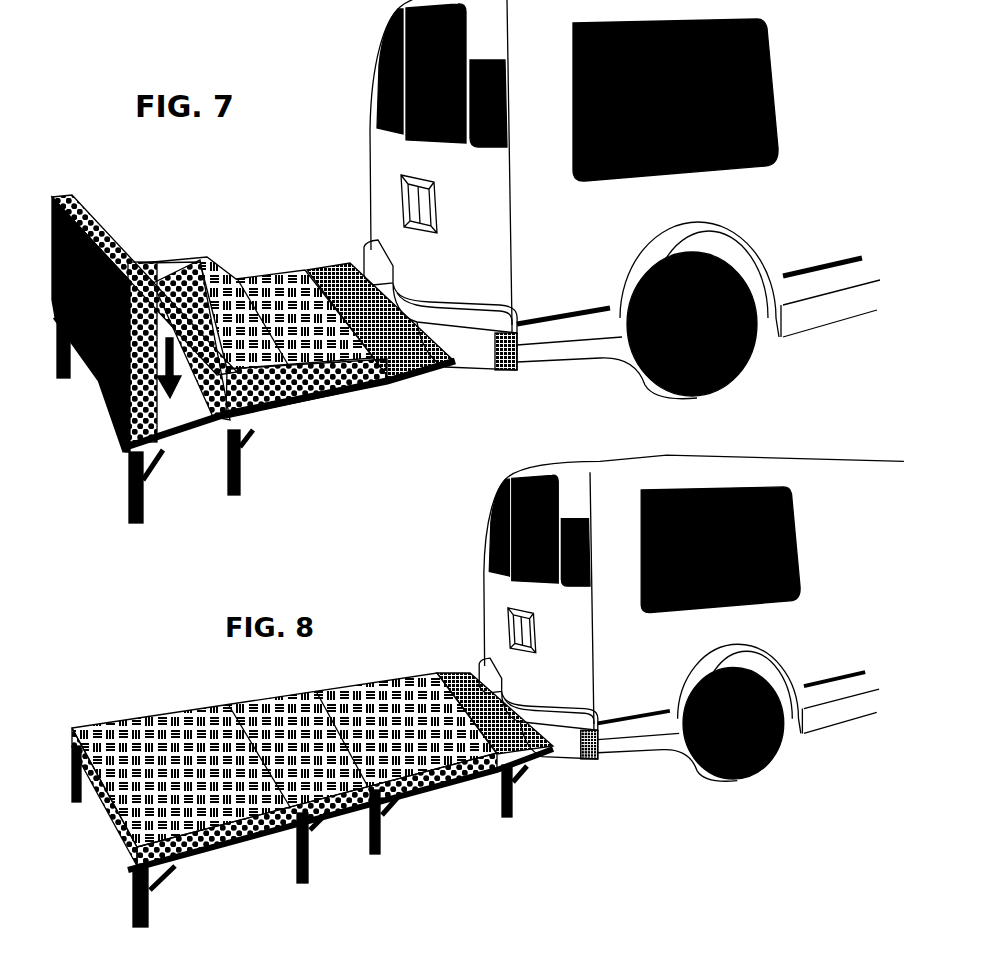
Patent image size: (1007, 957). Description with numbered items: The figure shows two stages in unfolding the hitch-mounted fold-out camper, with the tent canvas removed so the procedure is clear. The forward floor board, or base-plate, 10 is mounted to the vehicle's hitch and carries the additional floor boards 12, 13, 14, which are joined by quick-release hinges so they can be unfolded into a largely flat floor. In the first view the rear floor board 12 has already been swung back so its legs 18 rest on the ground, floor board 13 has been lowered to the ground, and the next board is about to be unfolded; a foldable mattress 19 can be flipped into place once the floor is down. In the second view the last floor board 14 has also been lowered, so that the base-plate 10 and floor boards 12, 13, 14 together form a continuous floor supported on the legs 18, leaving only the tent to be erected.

In FIG. 7, the floor board (base-plate) 10 is at (425, 382).
In FIG. 8, the floor board (base-plate) 10 is at (540, 760).
In FIG. 7, the floor board 12 is at (317, 410).
In FIG. 8, the floor board 12 is at (427, 793).
In FIG. 7, the floor board 13 is at (203, 443).
In FIG. 8, the floor board 13 is at (347, 817).
In FIG. 7, the floor board 14 is at (88, 382).
In FIG. 8, the floor board 14 is at (210, 852).
In FIG. 7, the support legs 18 is at (55, 356).
In FIG. 7, the foldable mattress 19 is at (186, 256).